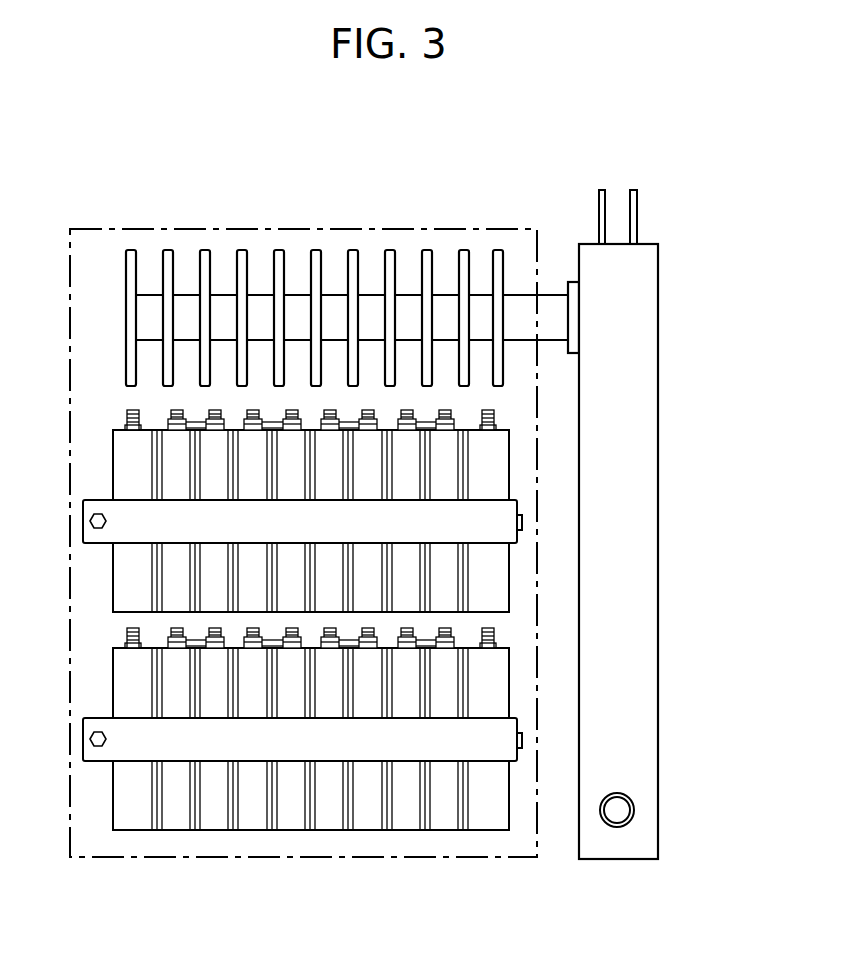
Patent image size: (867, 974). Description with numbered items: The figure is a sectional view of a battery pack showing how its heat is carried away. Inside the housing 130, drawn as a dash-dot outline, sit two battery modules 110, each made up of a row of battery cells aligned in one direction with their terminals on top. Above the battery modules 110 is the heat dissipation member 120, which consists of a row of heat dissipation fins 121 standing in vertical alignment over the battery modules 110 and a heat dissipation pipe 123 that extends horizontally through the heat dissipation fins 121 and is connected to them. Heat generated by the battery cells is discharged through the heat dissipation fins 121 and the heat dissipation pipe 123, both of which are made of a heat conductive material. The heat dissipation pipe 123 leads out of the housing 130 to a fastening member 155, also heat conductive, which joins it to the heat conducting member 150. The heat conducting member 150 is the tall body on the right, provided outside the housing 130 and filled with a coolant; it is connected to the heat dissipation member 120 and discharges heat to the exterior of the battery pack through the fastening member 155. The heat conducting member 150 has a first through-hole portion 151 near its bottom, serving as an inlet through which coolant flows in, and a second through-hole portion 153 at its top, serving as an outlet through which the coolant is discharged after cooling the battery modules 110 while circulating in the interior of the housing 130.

The battery module 110 is at (375, 831).
The heat dissipation member 120 is at (290, 268).
The heat dissipation fins 121 is at (130, 249).
The heat dissipation pipe 123 is at (519, 295).
The housing 130 is at (333, 230).
The heat conducting member 150 is at (678, 483).
The first through-hole portion 151 is at (622, 810).
The second through-hole portion 153 is at (613, 198).
The fastening member 155 is at (569, 289).